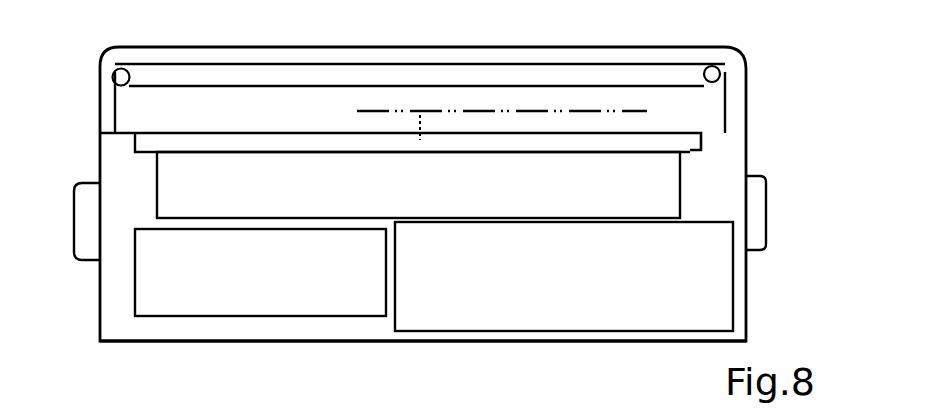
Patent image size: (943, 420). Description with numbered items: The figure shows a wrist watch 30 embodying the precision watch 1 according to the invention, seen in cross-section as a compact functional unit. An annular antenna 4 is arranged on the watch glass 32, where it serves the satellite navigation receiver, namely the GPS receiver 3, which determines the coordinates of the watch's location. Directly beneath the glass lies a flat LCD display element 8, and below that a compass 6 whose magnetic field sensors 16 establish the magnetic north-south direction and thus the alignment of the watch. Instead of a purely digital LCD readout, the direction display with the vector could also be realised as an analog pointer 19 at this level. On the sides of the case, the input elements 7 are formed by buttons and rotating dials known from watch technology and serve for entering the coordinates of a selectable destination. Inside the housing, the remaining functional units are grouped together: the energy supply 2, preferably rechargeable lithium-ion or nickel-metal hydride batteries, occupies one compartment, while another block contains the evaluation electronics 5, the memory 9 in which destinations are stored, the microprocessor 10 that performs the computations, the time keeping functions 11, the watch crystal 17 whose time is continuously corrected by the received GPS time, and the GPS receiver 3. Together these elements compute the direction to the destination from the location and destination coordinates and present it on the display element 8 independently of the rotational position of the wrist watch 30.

The precision watch 1 is at (97, 300).
The energy supply 2 is at (564, 276).
The GPS receiver 3 is at (260, 272).
The antenna 4 is at (113, 78).
The evaluation electronics 5 is at (260, 272).
The compass 6 is at (418, 185).
The input element 7 is at (84, 206).
The display element 8 is at (702, 137).
The memory 9 is at (260, 272).
The microprocessor 10 is at (260, 272).
The time keeping functions 11 is at (260, 272).
The magnetic field sensors 16 is at (418, 185).
The watch crystal 17 is at (260, 272).
The analog pointer 19 is at (557, 110).
The wrist watch 30 is at (198, 344).
The watch glass 32 is at (115, 54).